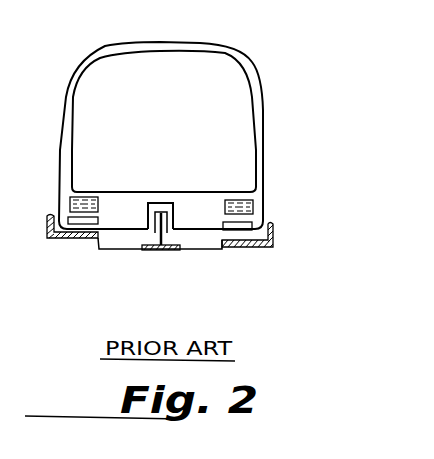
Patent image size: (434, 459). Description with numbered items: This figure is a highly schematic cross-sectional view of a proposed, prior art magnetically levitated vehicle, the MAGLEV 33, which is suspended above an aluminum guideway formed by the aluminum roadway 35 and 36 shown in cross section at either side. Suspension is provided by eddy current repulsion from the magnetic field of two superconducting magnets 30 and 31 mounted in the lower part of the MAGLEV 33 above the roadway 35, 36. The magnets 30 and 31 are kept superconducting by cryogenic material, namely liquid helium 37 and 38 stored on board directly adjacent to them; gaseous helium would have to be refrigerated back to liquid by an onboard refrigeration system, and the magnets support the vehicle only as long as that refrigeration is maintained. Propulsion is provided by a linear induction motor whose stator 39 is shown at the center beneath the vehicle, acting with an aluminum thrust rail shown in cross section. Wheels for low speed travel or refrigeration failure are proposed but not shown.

The superconducting magnet 30 is at (85, 223).
The superconducting magnet 31 is at (238, 230).
The MAGLEV 33 is at (277, 132).
The aluminum roadway 35 is at (48, 233).
The aluminum roadway 36 is at (276, 247).
The liquid helium 37 is at (77, 199).
The liquid helium 38 is at (255, 206).
The stator 39 is at (150, 250).